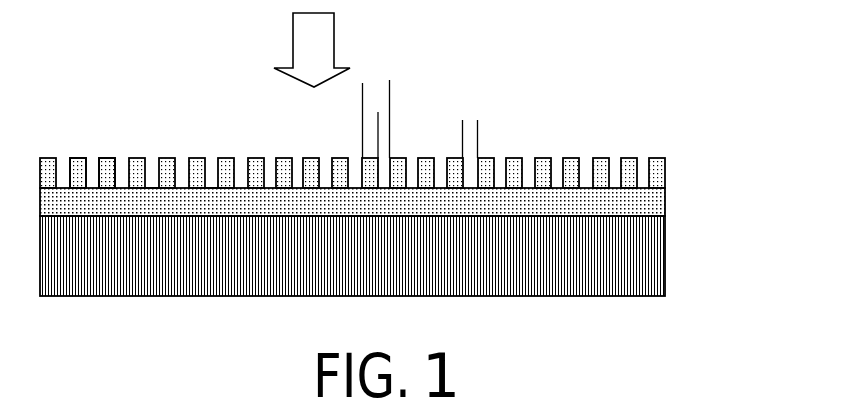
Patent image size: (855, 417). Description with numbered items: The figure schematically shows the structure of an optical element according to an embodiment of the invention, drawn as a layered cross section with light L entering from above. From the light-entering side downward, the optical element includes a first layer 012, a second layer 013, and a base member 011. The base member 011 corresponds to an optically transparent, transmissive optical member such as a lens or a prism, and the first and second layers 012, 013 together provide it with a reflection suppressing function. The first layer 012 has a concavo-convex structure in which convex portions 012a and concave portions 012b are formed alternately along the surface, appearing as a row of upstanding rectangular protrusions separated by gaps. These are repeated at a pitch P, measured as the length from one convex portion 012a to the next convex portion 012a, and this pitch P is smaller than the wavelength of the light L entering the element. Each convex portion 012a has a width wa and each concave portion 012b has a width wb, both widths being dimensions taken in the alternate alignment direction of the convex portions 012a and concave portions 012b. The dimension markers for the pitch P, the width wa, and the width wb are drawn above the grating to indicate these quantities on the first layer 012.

The base member 011 is at (668, 256).
The second layer 013 is at (668, 205).
The first layer 012 is at (668, 174).
The convex portion 012a is at (75, 158).
The concave portion 012b is at (151, 162).
The light L is at (334, 39).
The pitch P is at (417, 102).
The width of convex portion wa is at (340, 133).
The width of concave portion wb is at (443, 133).